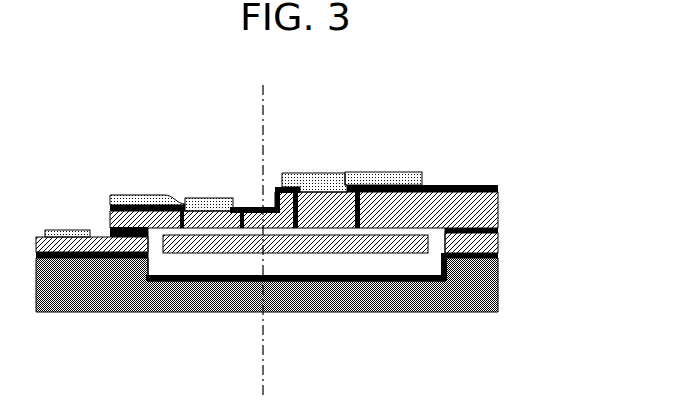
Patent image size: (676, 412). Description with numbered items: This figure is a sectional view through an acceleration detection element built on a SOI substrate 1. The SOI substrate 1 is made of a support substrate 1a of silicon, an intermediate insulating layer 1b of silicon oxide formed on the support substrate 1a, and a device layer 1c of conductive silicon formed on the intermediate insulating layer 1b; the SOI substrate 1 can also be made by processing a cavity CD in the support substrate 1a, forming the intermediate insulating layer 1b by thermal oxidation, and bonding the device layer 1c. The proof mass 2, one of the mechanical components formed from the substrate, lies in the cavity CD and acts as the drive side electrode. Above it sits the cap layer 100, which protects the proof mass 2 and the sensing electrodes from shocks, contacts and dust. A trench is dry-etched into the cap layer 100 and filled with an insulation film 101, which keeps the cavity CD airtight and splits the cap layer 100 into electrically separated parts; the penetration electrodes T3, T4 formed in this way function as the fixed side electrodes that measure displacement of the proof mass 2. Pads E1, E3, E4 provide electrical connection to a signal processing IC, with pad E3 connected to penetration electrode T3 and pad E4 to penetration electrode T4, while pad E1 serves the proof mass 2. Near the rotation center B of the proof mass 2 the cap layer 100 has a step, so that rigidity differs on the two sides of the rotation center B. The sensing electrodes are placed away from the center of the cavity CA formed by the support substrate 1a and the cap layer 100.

The SOI substrate 1 is at (324, 280).
The support substrate 1a is at (497, 307).
The intermediate insulating layer 1b is at (498, 260).
The device layer 1c is at (493, 243).
The proof mass 2 is at (393, 255).
The cap layer 100 is at (497, 198).
The insulation film 101 is at (465, 184).
The pad E1 is at (53, 230).
The pad E3 is at (127, 195).
The penetration electrode T3 is at (209, 208).
The penetration electrode T4 is at (339, 203).
The pad E4 is at (395, 174).
The cavity CA is at (138, 258).
The cavity CD is at (200, 266).
The rotation center B is at (272, 238).